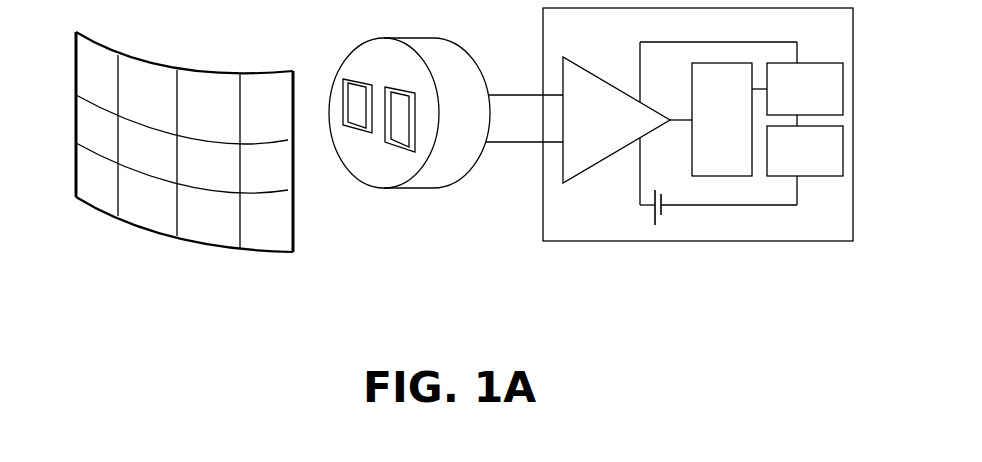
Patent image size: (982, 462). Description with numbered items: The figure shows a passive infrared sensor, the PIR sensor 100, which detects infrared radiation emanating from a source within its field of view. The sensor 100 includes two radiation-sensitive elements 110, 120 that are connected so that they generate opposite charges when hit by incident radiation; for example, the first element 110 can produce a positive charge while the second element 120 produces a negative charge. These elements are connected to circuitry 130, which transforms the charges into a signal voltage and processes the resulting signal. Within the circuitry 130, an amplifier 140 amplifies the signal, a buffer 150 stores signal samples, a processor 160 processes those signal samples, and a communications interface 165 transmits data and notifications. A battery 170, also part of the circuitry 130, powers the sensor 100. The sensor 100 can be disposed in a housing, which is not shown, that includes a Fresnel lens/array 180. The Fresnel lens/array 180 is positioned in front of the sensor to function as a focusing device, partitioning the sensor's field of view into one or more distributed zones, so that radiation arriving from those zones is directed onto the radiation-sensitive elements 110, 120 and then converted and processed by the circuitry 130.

The PIR sensor 100 is at (434, 319).
The radiation-sensitive element 110 is at (345, 88).
The radiation-sensitive element 120 is at (417, 117).
The circuitry 130 is at (691, 239).
The amplifier 140 is at (586, 127).
The buffer 150 is at (708, 101).
The processor 160 is at (843, 70).
The communications interface 165 is at (843, 163).
The battery 170 is at (645, 213).
The Fresnel lens/array 180 is at (77, 82).